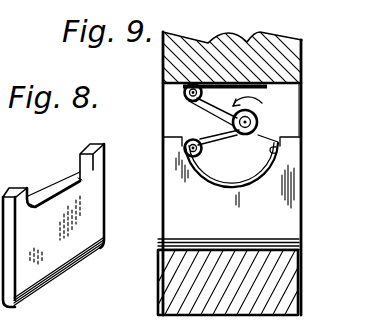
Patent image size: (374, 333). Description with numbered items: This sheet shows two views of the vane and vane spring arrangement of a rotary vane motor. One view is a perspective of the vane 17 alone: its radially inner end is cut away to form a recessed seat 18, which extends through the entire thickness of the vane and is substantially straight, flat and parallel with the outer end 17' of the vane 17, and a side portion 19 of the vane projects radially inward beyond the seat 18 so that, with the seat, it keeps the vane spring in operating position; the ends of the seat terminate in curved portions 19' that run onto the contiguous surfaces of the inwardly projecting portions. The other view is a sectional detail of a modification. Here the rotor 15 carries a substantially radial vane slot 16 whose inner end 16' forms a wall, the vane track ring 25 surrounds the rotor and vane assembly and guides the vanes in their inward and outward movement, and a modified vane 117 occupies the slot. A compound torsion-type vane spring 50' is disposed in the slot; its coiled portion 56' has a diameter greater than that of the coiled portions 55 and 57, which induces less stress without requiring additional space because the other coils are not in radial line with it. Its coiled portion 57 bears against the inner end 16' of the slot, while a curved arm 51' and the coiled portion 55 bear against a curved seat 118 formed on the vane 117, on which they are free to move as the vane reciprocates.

In FIG. 9, the rotor 15 is at (299, 53).
In FIG. 9, the vane slot 16 is at (325, 109).
In FIG. 9, the inner end of vane slot 16' is at (272, 77).
In FIG. 8, the vane 17 is at (71, 225).
In FIG. 8, the outer end of vane 17' is at (78, 272).
In FIG. 9, the outer end of vane 17' is at (228, 239).
In FIG. 8, the recessed seat 18 is at (56, 186).
In FIG. 8, the side portion of vane 19 is at (70, 158).
In FIG. 8, the notch corner 19' is at (85, 201).
In FIG. 9, the vane track ring 25 is at (283, 284).
In FIG. 9, the modified compound torsion-type vane spring 50' is at (260, 105).
In FIG. 9, the curved arm 51' is at (231, 161).
In FIG. 9, the coiled portion 55 is at (222, 134).
In FIG. 9, the coiled portion 56' is at (288, 125).
In FIG. 9, the coiled portion 57 is at (184, 93).
In FIG. 9, the vane 117 is at (283, 229).
In FIG. 9, the curved seat 118 is at (276, 150).